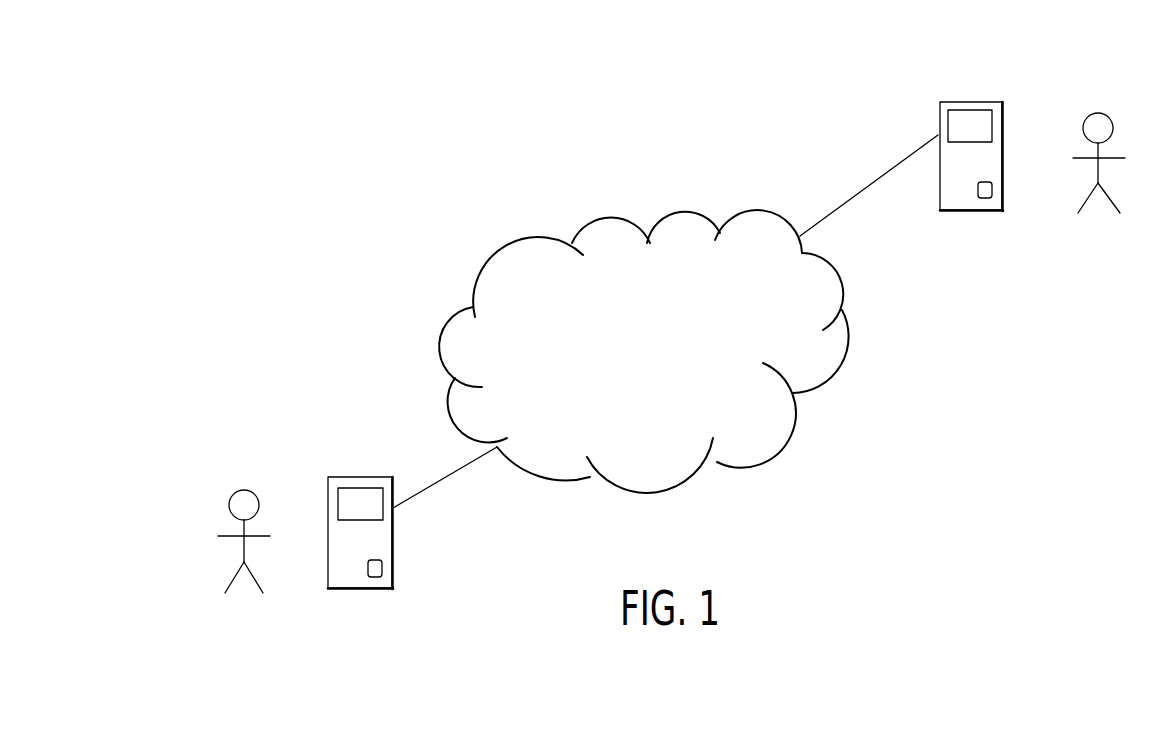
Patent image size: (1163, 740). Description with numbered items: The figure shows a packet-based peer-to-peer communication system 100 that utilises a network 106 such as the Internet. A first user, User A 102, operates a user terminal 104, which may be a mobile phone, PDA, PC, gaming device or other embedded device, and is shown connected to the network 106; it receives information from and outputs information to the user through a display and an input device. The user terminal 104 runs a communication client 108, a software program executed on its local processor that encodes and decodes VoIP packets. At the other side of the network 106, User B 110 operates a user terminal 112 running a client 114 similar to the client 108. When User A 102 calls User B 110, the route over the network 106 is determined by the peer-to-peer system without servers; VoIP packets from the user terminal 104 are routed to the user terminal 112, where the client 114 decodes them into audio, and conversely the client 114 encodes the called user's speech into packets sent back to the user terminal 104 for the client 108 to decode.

The packet-based P2P communication system 100 is at (436, 199).
The User A 102 is at (1100, 112).
The user terminal 104 is at (970, 102).
The network 106 is at (847, 350).
The communication client 108 is at (988, 199).
The User B 110 is at (242, 489).
The user terminal 112 is at (357, 477).
The client 114 is at (375, 578).